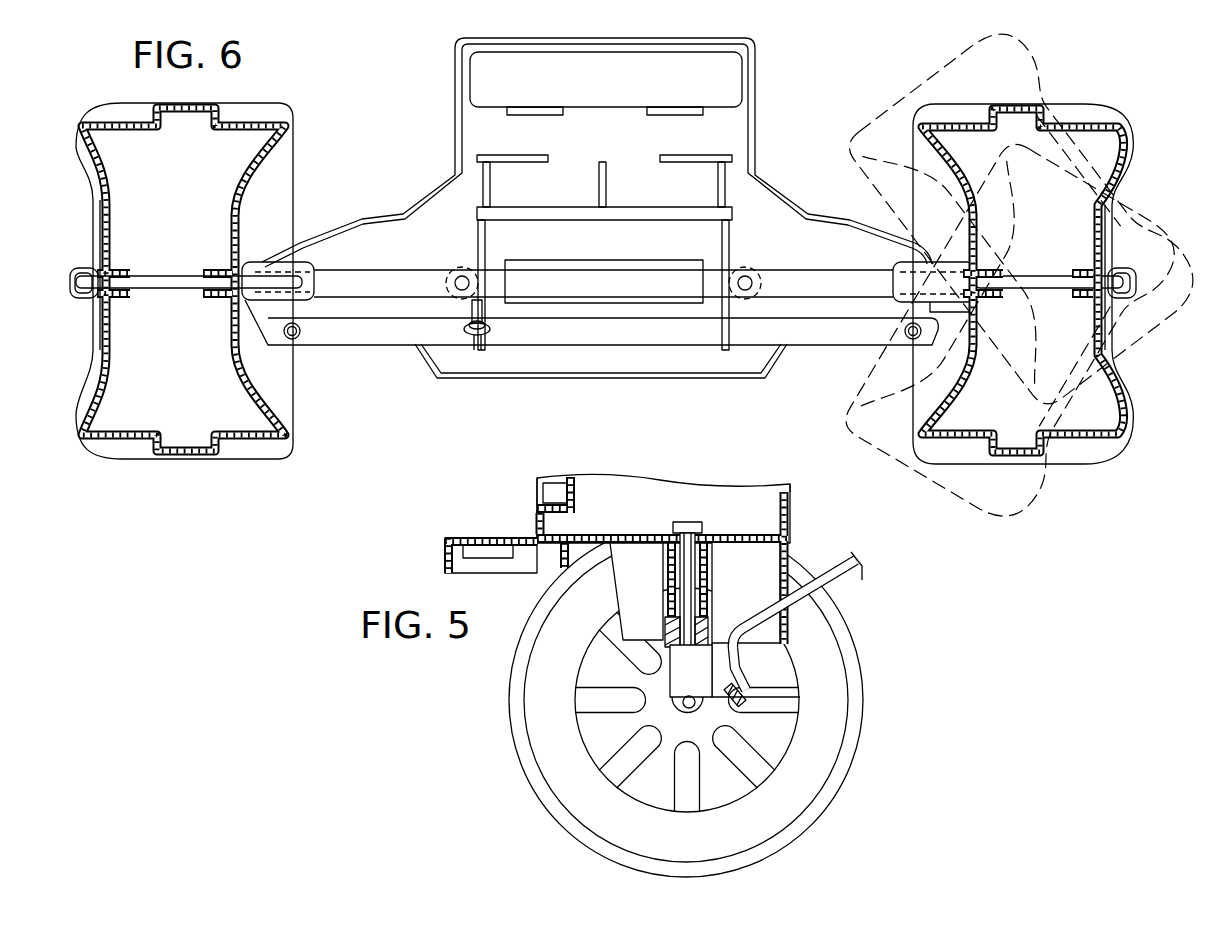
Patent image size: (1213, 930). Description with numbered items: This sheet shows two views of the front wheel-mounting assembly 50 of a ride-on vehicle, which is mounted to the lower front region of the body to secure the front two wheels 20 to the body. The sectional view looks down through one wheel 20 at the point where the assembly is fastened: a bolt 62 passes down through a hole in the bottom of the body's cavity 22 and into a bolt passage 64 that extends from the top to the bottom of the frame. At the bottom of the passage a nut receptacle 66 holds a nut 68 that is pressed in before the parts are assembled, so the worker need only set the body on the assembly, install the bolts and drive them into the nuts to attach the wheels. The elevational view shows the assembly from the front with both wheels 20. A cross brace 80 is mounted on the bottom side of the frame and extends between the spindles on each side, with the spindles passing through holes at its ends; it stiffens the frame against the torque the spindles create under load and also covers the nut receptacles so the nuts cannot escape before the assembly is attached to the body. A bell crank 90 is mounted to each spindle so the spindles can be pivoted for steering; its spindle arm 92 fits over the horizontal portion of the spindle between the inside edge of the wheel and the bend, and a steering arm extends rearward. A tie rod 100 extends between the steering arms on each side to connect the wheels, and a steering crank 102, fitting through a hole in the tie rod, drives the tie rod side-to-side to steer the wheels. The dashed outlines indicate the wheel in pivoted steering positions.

In FIG. 6, the wheels 20 is at (122, 460).
In FIG. 5, the wheels 20 is at (540, 800).
In FIG. 5, the cavity 22 is at (648, 592).
In FIG. 6, the wheel-mounting assembly 50 is at (793, 159).
In FIG. 5, the bolts 62 is at (705, 527).
In FIG. 5, the bolt passages 64 is at (688, 573).
In FIG. 5, the nut receptacle 66 is at (688, 650).
In FIG. 5, the nut 68 is at (705, 627).
In FIG. 6, the cross brace 80 is at (438, 268).
In FIG. 6, the bell crank 90 is at (258, 262).
In FIG. 6, the spindle arm 92 is at (166, 276).
In FIG. 6, the tie rod 100 is at (360, 345).
In FIG. 5, the steering crank 102 is at (848, 562).